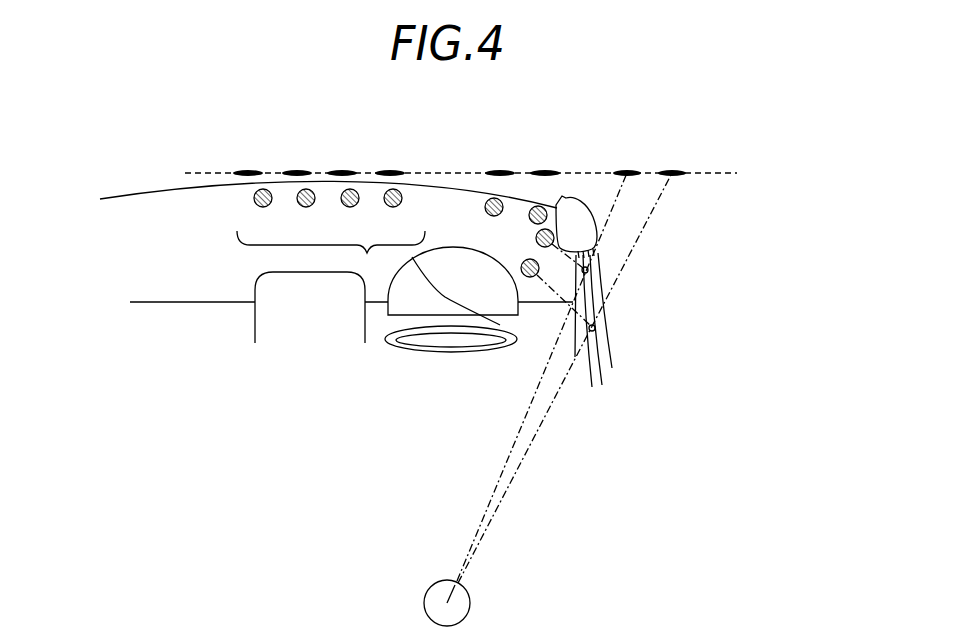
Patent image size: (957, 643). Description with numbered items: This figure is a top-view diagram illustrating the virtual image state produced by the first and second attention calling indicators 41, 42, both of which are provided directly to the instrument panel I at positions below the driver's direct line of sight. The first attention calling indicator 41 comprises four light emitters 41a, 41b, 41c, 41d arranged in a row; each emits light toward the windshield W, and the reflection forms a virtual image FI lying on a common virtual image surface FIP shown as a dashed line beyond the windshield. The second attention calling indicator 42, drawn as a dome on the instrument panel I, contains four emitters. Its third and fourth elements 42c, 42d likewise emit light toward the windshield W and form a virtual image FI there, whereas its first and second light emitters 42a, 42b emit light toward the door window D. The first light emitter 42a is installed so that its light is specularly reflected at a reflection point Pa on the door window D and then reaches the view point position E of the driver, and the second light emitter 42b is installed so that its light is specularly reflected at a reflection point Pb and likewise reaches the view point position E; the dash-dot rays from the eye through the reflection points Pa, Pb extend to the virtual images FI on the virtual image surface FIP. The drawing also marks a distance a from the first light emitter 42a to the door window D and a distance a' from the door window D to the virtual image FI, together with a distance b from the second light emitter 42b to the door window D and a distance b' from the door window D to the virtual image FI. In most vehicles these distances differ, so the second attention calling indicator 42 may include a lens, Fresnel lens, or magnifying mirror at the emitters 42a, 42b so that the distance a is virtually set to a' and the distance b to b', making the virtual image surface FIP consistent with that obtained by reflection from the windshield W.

The windshield W is at (162, 189).
The virtual image FI is at (669, 171).
The virtual image surface FIP is at (713, 173).
The first attention calling indicator 41 is at (331, 255).
The light emitter 41a is at (263, 207).
The light emitter 41b is at (306, 207).
The light emitter 41c is at (350, 207).
The light emitter 41d is at (393, 207).
The second attention calling indicator 42 is at (451, 299).
The first light emitter 42a is at (523, 275).
The second light emitter 42b is at (538, 245).
The third element 42c is at (530, 221).
The fourth element 42d is at (487, 213).
The instrument panel I is at (216, 278).
The door window D is at (608, 353).
The reflection point Pb is at (588, 268).
The reflection point Pa is at (595, 327).
The view point position E is at (470, 601).
The distance a is at (562, 300).
The distance b is at (567, 258).
The distance a' is at (565, 378).
The distance b' is at (549, 377).